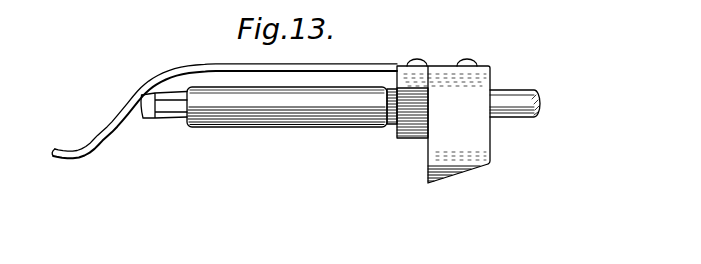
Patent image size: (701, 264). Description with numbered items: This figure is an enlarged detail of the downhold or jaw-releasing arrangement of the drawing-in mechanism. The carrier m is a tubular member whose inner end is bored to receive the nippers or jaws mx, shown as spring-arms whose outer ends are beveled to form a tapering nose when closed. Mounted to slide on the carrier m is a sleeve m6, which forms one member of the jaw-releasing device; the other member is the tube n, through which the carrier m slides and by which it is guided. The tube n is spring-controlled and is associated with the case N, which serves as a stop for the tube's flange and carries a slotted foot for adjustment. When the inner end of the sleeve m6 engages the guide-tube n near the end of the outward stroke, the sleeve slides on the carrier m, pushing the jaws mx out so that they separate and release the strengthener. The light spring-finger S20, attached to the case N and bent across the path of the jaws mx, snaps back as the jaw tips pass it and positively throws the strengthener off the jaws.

The spring-finger S20 is at (133, 93).
The nippers or jaws mx is at (182, 118).
The sleeve m6 is at (272, 120).
The tube n is at (391, 120).
The case N is at (418, 136).
The carrier m is at (527, 98).